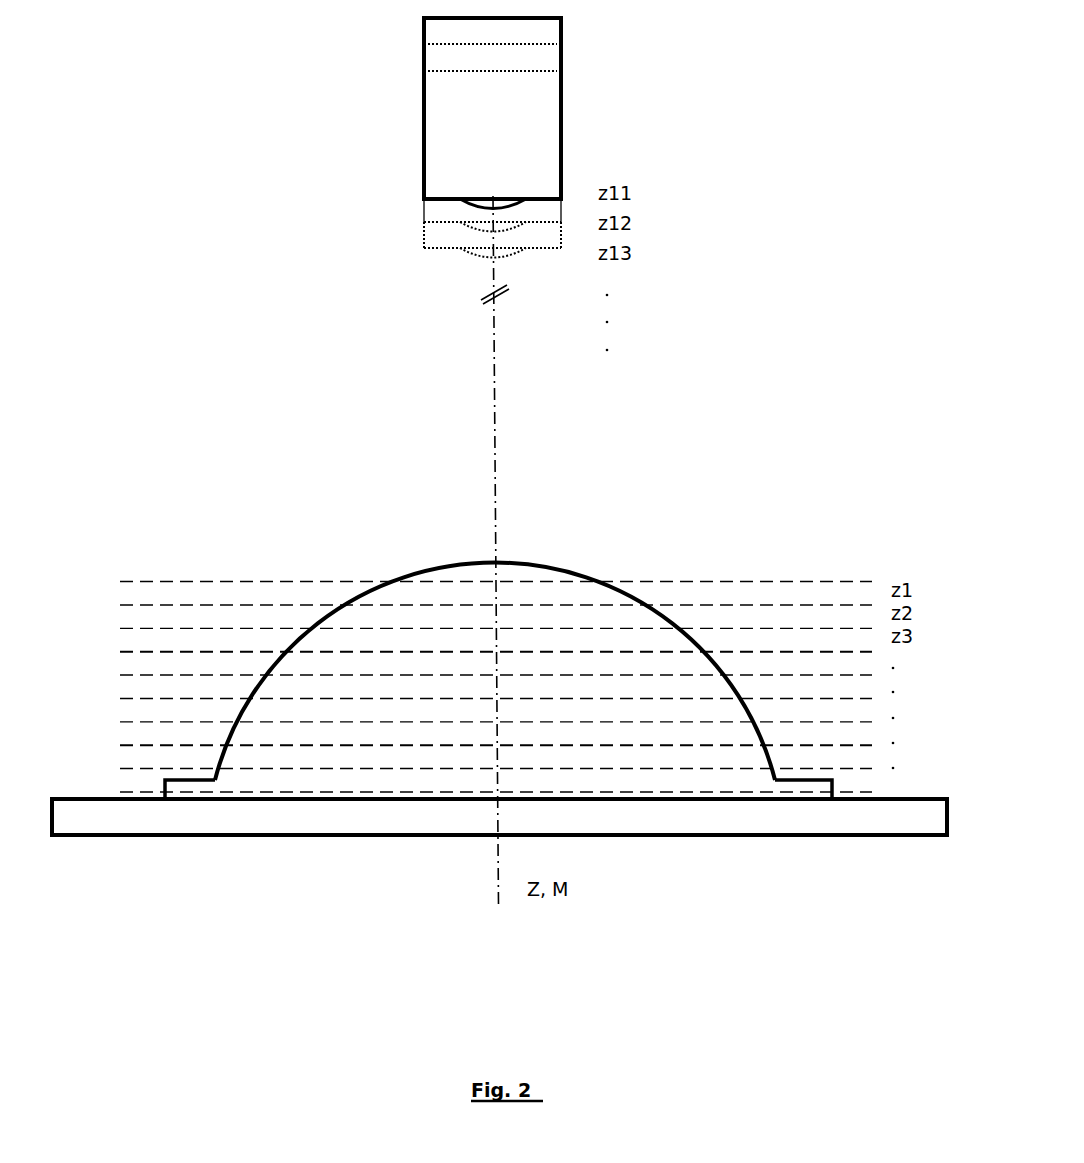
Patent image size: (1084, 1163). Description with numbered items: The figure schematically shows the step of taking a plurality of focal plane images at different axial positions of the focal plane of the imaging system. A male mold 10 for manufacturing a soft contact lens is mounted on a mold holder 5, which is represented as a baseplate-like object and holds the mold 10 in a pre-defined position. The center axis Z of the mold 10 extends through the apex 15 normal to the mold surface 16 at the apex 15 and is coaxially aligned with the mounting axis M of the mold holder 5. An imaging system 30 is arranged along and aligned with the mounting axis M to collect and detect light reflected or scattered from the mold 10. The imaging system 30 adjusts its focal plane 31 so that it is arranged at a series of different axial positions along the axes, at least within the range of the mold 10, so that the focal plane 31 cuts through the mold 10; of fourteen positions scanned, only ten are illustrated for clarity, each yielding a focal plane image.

The mold holder 5 is at (722, 823).
The mold 10 is at (423, 568).
The apex 15 is at (503, 558).
The mold surface 16 is at (563, 563).
The imaging system 30 is at (546, 103).
The focal plane 31 is at (173, 622).